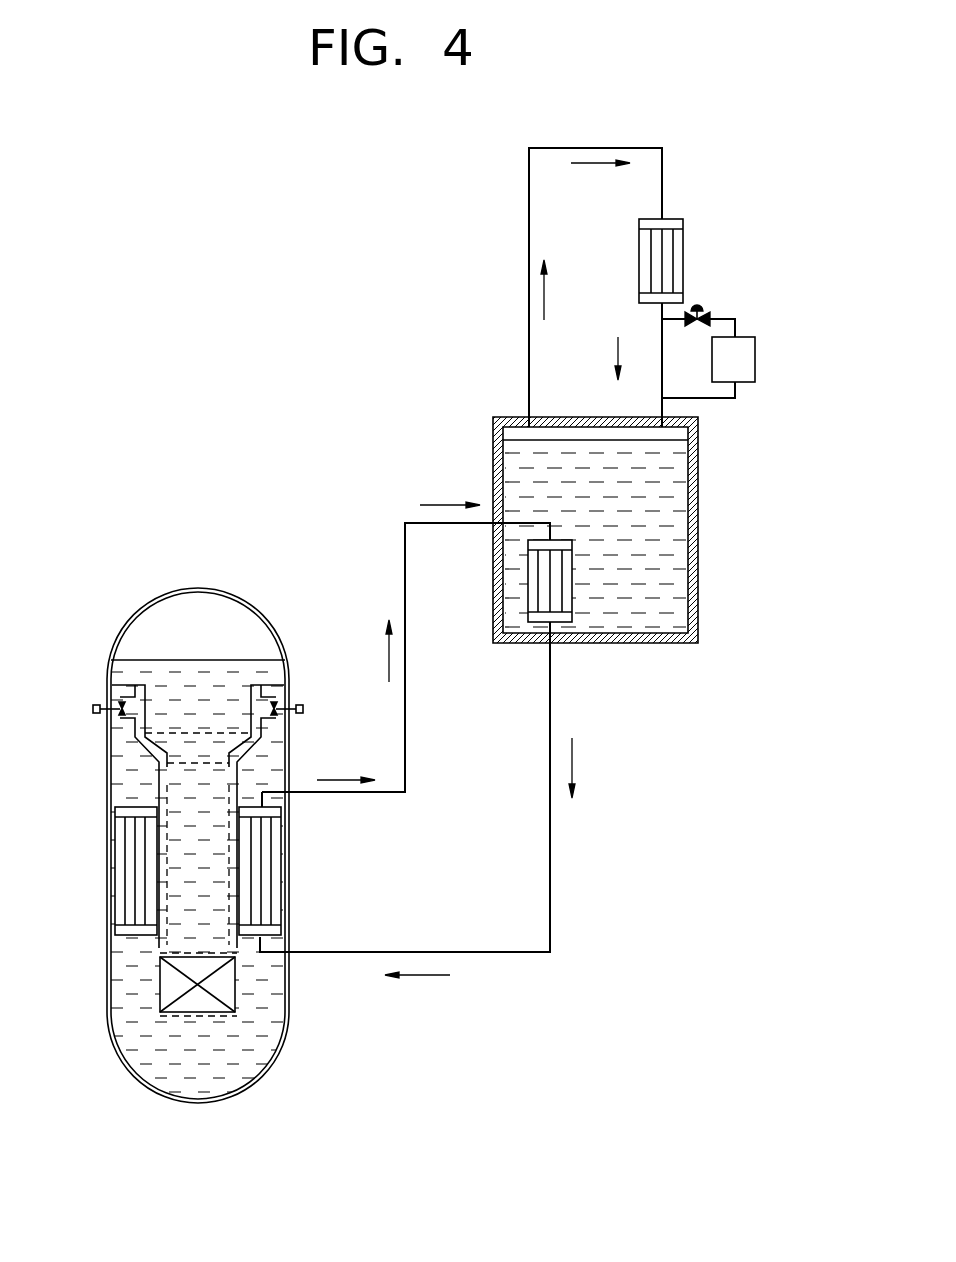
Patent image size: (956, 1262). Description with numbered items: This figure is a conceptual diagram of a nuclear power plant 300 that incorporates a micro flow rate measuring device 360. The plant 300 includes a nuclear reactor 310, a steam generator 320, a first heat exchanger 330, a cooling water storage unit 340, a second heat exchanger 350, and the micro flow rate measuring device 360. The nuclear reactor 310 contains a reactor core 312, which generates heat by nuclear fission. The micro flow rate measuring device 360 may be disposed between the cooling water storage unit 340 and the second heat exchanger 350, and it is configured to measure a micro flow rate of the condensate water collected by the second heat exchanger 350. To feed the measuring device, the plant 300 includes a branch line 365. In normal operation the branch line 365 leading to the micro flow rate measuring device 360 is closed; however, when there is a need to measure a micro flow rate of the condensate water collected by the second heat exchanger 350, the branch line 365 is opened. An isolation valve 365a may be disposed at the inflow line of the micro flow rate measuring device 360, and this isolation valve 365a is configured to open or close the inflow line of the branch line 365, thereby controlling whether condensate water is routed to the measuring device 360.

The nuclear power plant 300 is at (243, 438).
The nuclear reactor 310 is at (197, 588).
The reactor core 312 is at (168, 985).
The steam generator 320 is at (265, 870).
The first heat exchanger 330 is at (558, 578).
The cooling water storage unit 340 is at (698, 505).
The second heat exchanger 350 is at (683, 260).
The micro flow rate measuring device 360 is at (755, 358).
The branch line 365 is at (735, 324).
The isolation valve 365a is at (710, 315).